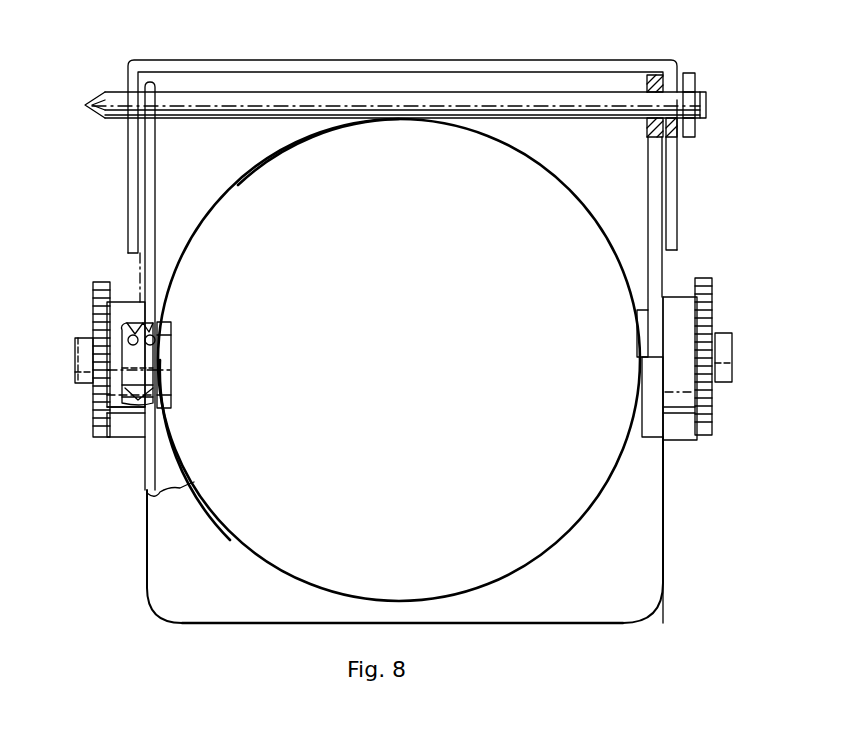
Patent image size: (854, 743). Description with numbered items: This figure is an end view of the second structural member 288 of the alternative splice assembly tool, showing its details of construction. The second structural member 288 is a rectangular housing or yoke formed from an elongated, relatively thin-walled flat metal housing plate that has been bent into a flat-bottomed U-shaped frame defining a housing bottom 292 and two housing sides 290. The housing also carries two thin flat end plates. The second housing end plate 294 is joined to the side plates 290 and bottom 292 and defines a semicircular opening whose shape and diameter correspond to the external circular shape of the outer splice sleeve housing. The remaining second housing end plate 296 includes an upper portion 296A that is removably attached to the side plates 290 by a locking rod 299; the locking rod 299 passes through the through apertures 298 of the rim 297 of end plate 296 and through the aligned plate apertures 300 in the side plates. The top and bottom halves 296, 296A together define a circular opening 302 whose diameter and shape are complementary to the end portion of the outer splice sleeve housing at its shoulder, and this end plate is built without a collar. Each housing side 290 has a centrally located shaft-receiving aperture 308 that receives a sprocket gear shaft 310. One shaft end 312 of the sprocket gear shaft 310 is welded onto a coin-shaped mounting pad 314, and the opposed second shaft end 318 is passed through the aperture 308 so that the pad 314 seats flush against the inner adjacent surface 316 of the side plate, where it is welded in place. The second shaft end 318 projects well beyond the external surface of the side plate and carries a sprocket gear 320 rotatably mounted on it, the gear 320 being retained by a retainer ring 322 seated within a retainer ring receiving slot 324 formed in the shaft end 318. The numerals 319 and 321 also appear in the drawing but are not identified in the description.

The second structural member 288 is at (534, 42).
The locking rod 299 is at (236, 100).
The through apertures 298 is at (680, 95).
The through plate apertures 300 is at (655, 108).
The rim 297 is at (673, 203).
The circular opening 302 is at (298, 147).
The upper portion 296A is at (217, 178).
The second housing end plate 296 is at (175, 463).
The housing sides 290 is at (150, 470).
The second housing end plate 294 is at (172, 555).
The housing bottom 292 is at (566, 625).
The sprocket gear 320 is at (100, 300).
The second shaft end 318 is at (75, 362).
The retainer ring 322 is at (90, 332).
The gear box bottom 319 is at (145, 437).
The retainer ring receiving slot 324 is at (715, 338).
The clamp block 321 is at (135, 328).
The inner adjacent surface 316 is at (165, 330).
The coin-shaped mounting pad 314 is at (165, 330).
The shaft-receiving aperture 308 is at (172, 349).
The shaft end 312 is at (170, 360).
The sprocket gear shaft 310 is at (150, 368).